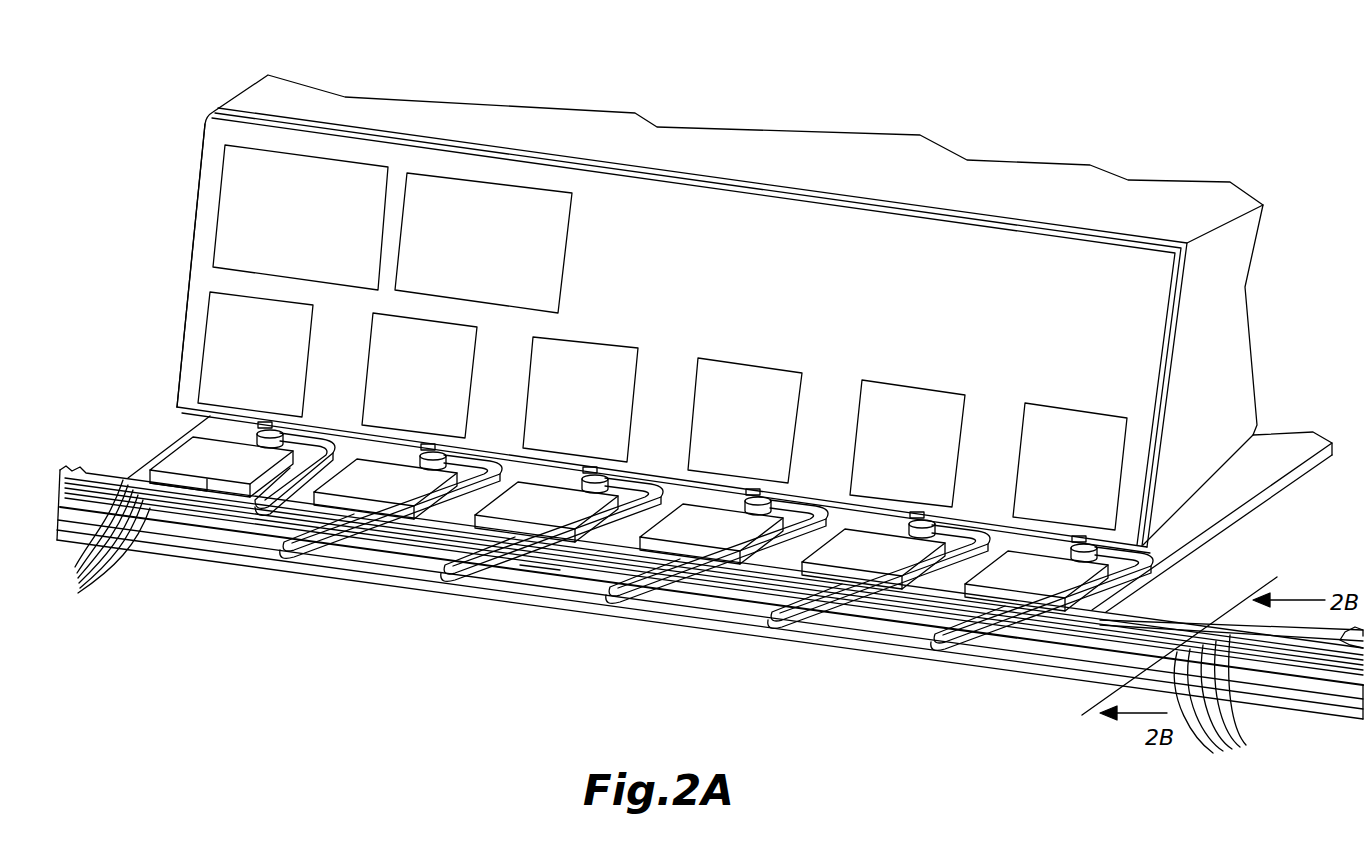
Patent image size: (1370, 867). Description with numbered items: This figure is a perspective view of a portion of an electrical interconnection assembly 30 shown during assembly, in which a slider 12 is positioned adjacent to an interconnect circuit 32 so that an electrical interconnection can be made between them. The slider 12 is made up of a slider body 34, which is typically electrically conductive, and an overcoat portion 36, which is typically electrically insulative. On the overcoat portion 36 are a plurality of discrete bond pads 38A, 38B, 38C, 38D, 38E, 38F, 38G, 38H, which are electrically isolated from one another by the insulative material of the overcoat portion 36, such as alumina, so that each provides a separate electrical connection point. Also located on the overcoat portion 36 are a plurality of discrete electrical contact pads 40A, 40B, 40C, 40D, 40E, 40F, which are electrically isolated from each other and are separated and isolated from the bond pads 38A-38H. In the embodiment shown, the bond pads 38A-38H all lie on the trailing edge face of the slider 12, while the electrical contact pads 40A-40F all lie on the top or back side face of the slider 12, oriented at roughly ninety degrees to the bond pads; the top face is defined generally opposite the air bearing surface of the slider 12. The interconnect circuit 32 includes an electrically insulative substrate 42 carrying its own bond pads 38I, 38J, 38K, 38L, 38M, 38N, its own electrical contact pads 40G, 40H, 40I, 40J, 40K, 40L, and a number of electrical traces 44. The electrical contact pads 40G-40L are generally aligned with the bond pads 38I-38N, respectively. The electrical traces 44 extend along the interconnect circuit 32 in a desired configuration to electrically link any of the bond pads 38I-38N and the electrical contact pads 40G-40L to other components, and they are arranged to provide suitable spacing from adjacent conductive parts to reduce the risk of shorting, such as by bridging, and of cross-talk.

The slider 12 is at (1087, 207).
The electrical interconnection assembly 30 is at (360, 679).
The interconnect circuit 32 is at (840, 652).
The slider body 34 is at (1225, 333).
The overcoat portion 36 is at (522, 265).
The bond pad 38A is at (255, 354).
The bond pad 38B is at (419, 375).
The bond pad 38C is at (580, 399).
The bond pad 38D is at (745, 420).
The bond pad 38E is at (907, 443).
The bond pad 38F is at (1070, 466).
The bond pad 38G is at (300, 217).
The bond pad 38H is at (483, 243).
The bond pad 38I is at (200, 452).
The bond pad 38J is at (345, 487).
The bond pad 38K is at (507, 507).
The bond pad 38L is at (720, 530).
The bond pad 38M is at (885, 560).
The bond pad 38N is at (1055, 575).
The electrical contact pad 40A is at (258, 424).
The electrical contact pad 40B is at (430, 452).
The electrical contact pad 40C is at (593, 475).
The electrical contact pad 40D is at (762, 500).
The electrical contact pad 40E is at (920, 525).
The electrical contact pad 40F is at (1090, 545).
The electrical contact pad 40G is at (250, 508).
The electrical contact pad 40H is at (415, 470).
The electrical contact pad 40I is at (613, 493).
The electrical contact pad 40J is at (752, 515).
The electrical contact pad 40K is at (922, 540).
The electrical contact pad 40L is at (1088, 552).
The electrically insulative substrate 42 is at (535, 573).
The electrical traces 44 is at (644, 630).